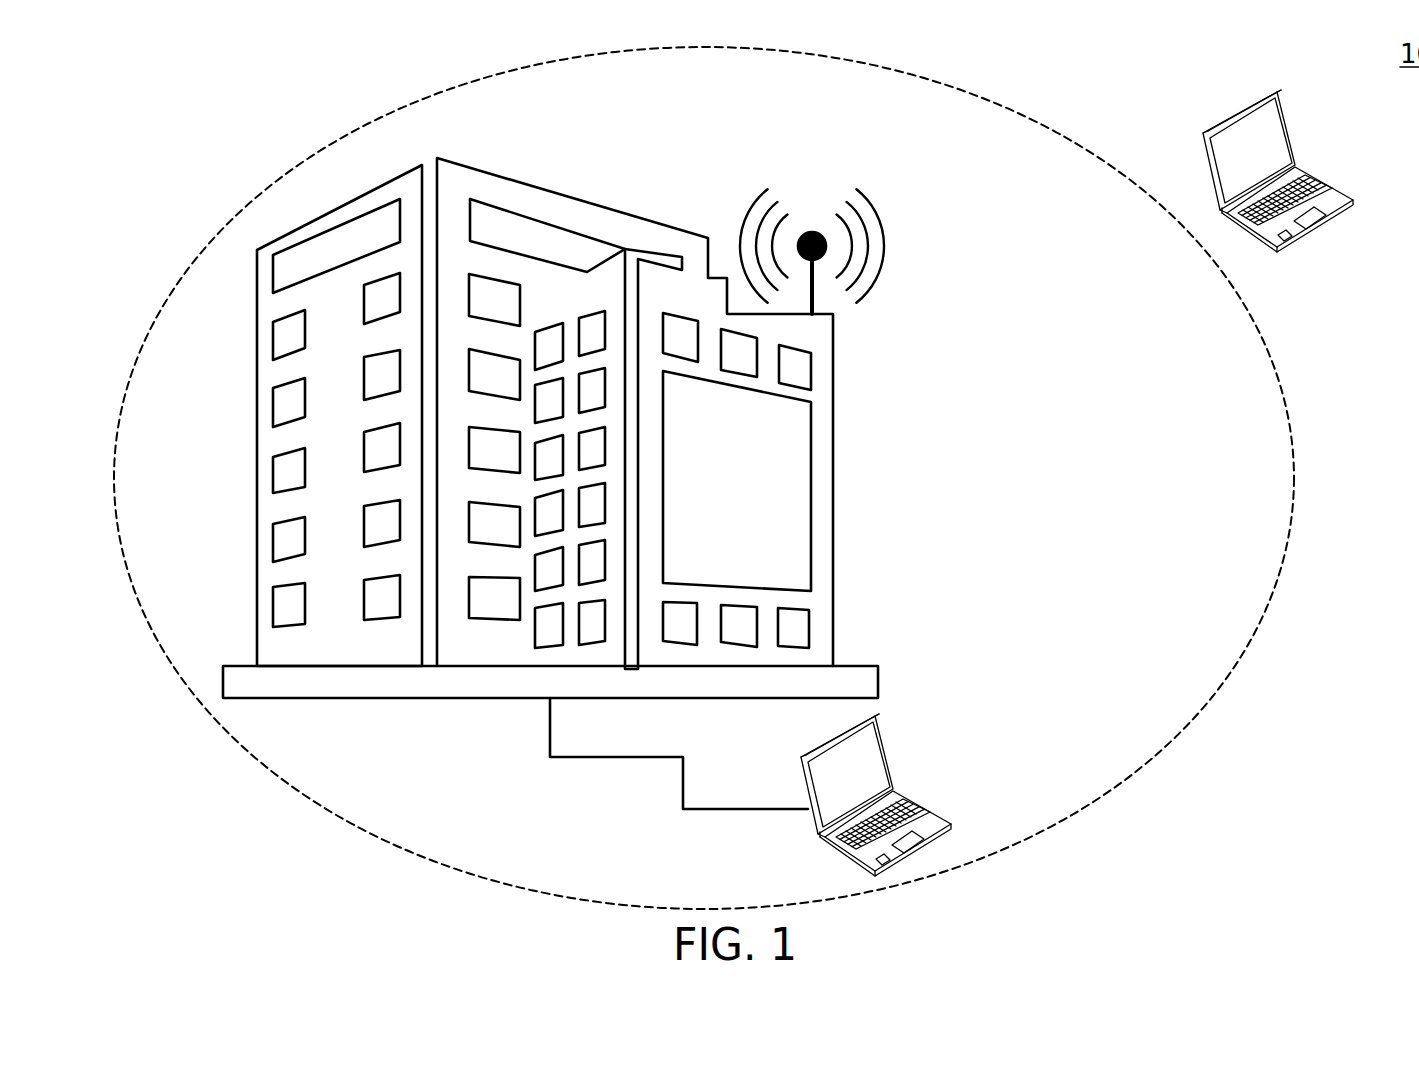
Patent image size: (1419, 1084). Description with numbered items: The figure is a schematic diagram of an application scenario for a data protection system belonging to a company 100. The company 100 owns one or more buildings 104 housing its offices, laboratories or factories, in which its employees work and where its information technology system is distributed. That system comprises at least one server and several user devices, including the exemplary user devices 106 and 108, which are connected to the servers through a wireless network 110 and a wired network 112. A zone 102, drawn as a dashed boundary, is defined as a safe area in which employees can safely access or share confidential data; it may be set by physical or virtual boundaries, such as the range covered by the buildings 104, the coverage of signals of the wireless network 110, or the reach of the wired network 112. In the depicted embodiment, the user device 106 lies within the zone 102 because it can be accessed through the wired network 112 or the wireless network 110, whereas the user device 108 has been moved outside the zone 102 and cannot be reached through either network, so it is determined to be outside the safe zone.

The company 100 is at (155, 115).
The zone 102 is at (288, 177).
The building 104 is at (565, 195).
The user device 106 is at (887, 752).
The user device 108 is at (1287, 130).
The wireless network 110 is at (878, 205).
The wired network 112 is at (682, 783).